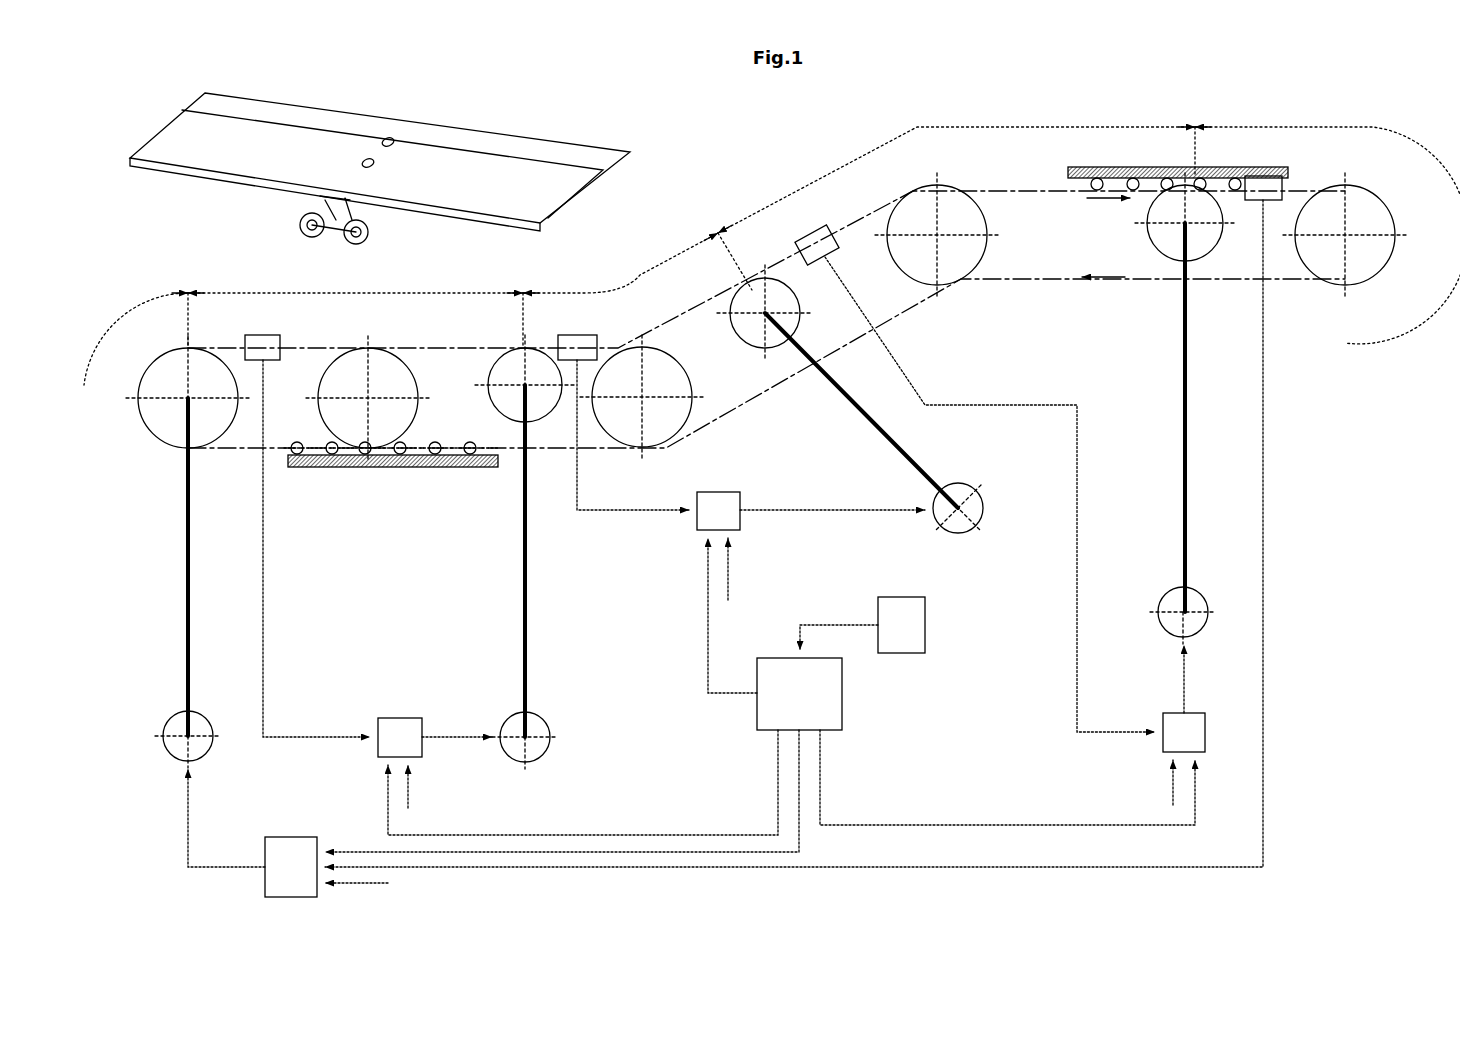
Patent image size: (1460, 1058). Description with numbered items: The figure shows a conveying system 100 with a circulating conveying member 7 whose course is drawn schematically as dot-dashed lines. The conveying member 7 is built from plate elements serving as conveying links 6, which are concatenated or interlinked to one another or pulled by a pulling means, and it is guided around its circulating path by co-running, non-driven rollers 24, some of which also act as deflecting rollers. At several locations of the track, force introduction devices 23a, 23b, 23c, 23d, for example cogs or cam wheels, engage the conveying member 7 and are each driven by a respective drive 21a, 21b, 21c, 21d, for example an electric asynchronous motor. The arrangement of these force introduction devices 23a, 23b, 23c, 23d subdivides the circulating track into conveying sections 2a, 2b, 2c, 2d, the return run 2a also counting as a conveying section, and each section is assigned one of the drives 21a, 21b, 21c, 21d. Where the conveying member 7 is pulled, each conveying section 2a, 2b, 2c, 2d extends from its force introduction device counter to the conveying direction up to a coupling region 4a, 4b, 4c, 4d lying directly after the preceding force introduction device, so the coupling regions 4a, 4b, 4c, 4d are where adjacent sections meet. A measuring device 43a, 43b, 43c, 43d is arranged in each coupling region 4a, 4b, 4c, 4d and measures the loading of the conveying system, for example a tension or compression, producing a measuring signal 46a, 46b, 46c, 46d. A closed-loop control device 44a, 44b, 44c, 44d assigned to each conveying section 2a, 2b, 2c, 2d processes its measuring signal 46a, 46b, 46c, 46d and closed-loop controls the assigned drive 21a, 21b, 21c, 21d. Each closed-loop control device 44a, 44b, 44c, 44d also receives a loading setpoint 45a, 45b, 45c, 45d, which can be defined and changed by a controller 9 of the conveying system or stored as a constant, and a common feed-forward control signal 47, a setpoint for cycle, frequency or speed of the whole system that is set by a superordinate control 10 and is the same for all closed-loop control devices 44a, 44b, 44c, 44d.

The conveying system 100 is at (726, 150).
The conveying links 6 is at (296, 113).
The conveying member 7 is at (1003, 185).
The rollers 24 is at (375, 355).
The force introduction device 23a is at (170, 433).
The force introduction device 23b is at (498, 395).
The force introduction device 23c is at (748, 335).
The force introduction device 23d is at (1155, 235).
The drive 21a is at (178, 745).
The drive 21b is at (533, 725).
The drive 21c is at (958, 495).
The drive 21d is at (1170, 600).
The measuring device 43a is at (1262, 202).
The measuring device 43b is at (258, 345).
The measuring device 43c is at (572, 345).
The measuring device 43d is at (812, 242).
The coupling region 4a is at (1300, 172).
The coupling region 4b is at (292, 330).
The coupling region 4c is at (616, 336).
The coupling region 4d is at (838, 218).
The conveying section 2a is at (130, 313).
The conveying section 2b is at (385, 293).
The conveying section 2c is at (645, 282).
The conveying section 2d is at (917, 127).
The closed-loop control device 44a is at (290, 843).
The closed-loop control device 44b is at (393, 725).
The closed-loop control device 44c is at (725, 500).
The closed-loop control device 44d is at (1170, 720).
The setpoint 45a is at (368, 850).
The setpoint 45b is at (583, 832).
The setpoint 45c is at (707, 583).
The setpoint 45d is at (1197, 782).
The measuring signal 46a is at (1265, 478).
The measuring signal 46b is at (265, 560).
The measuring signal 46c is at (645, 512).
The measuring signal 46d is at (1077, 497).
The feed-forward control signal 47 is at (408, 787).
The controller 9 is at (838, 708).
The superordinate control 10 is at (915, 625).